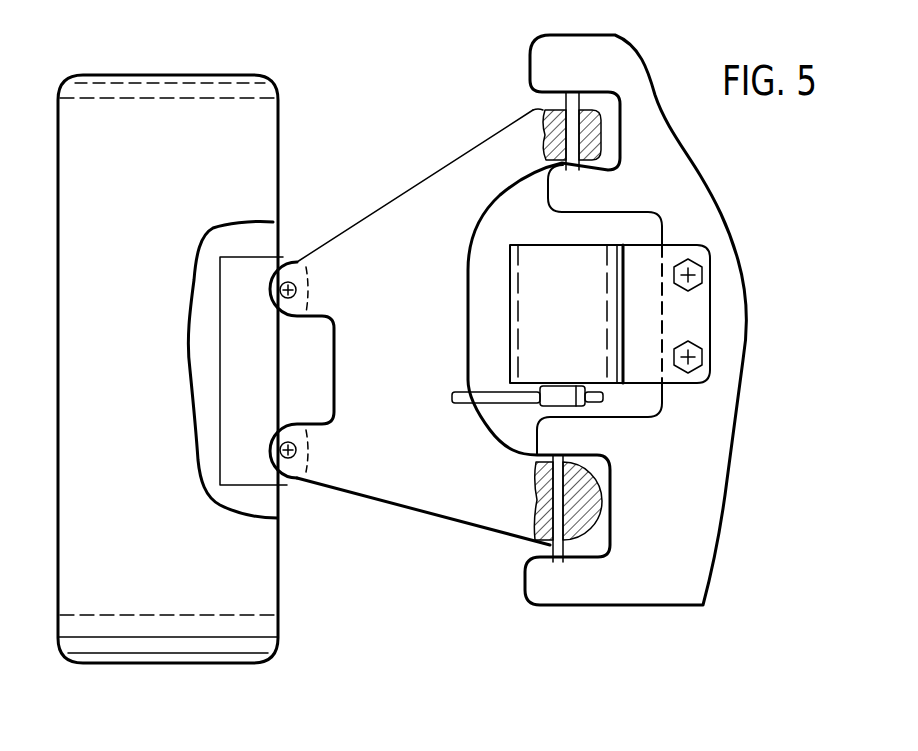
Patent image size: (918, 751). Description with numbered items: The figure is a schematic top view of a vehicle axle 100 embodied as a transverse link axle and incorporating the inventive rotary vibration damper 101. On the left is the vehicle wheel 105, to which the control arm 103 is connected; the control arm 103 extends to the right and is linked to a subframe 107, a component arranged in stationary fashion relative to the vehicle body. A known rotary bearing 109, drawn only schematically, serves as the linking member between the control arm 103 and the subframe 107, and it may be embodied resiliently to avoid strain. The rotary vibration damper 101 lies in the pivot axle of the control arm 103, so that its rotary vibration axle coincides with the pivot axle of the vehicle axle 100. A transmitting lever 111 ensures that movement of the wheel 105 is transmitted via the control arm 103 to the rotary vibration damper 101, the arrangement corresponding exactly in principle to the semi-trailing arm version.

The vehicle axle 100 is at (562, 645).
The rotary vibration damper 101 is at (593, 275).
The control arm 103 is at (433, 490).
The vehicle wheel 105 is at (253, 597).
The subframe 107 is at (612, 487).
The rotary bearing 109 is at (565, 545).
The transmitting lever 111 is at (505, 403).